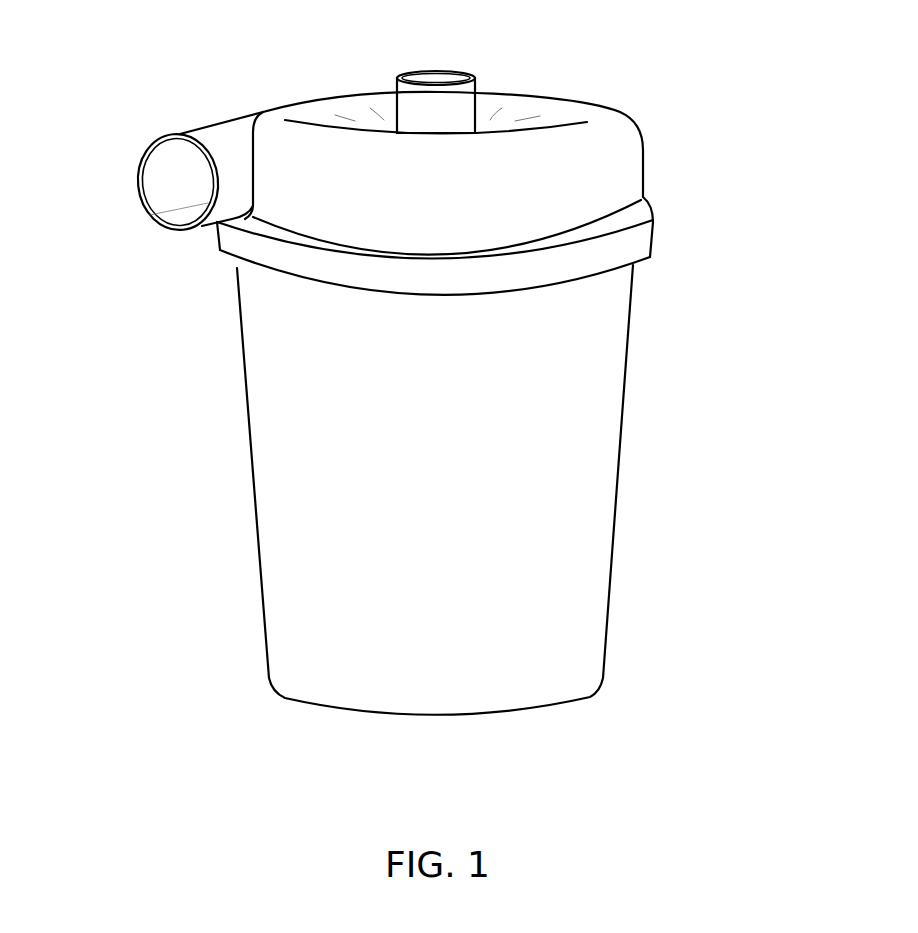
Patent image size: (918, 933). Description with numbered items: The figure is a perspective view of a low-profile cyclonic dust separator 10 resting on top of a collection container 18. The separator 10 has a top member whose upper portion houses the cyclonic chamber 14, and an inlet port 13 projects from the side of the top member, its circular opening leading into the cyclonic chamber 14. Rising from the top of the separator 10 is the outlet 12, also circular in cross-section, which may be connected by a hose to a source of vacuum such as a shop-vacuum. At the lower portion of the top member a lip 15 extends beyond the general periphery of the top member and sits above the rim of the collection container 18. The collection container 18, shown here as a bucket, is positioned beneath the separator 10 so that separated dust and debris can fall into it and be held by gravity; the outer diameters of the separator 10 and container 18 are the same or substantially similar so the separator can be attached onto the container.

The dust separator 10 is at (262, 88).
The outlet 12 is at (406, 58).
The inlet port 13 is at (134, 160).
The cyclonic chamber 14 is at (522, 112).
The lip 15 is at (680, 225).
The collection container 18 is at (250, 472).